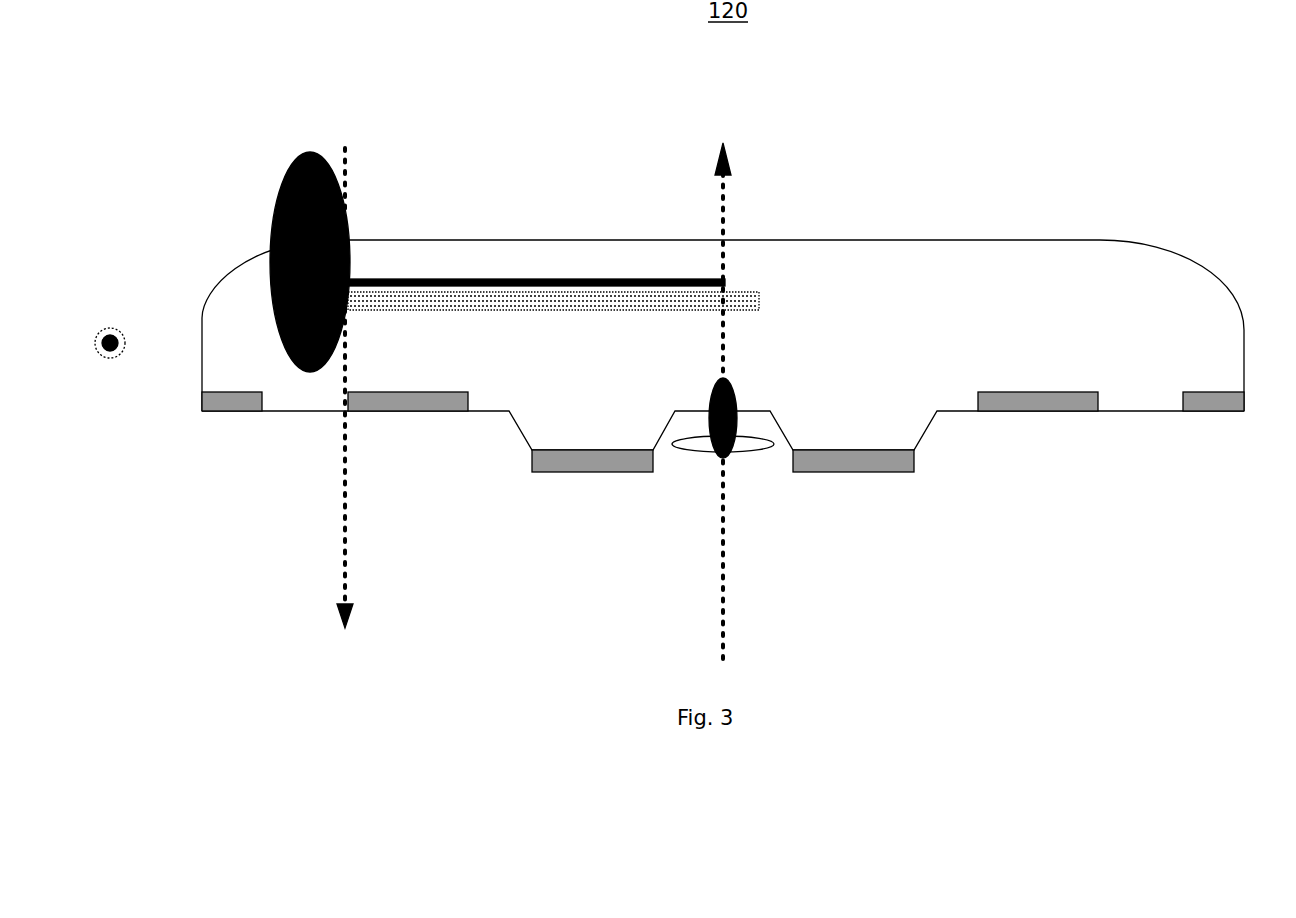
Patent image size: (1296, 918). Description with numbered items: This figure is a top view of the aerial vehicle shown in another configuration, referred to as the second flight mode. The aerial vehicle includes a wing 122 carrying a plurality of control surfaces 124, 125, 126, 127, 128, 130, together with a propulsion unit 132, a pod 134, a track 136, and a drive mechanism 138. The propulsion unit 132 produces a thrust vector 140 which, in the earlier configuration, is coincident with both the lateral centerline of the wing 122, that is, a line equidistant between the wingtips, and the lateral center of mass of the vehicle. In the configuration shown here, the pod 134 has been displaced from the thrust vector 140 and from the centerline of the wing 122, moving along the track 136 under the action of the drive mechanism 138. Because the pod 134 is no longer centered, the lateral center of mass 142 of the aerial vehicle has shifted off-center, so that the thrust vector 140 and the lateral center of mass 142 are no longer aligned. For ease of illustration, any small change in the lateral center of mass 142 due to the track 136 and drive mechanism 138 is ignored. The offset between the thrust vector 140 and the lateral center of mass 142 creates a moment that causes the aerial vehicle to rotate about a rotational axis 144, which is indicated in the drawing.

The wing 122 is at (926, 275).
The control surface 124 is at (242, 413).
The control surface 125 is at (457, 412).
The control surface 126 is at (572, 472).
The control surface 127 is at (865, 473).
The control surface 128 is at (1045, 410).
The control surface 130 is at (1222, 410).
The propulsion unit 132 is at (713, 460).
The pod 134 is at (283, 188).
The track 136 is at (537, 280).
The drive mechanism 138 is at (662, 295).
The thrust vector 140 is at (720, 203).
The lateral center of mass 142 is at (345, 556).
The rotational axis 144 is at (108, 328).